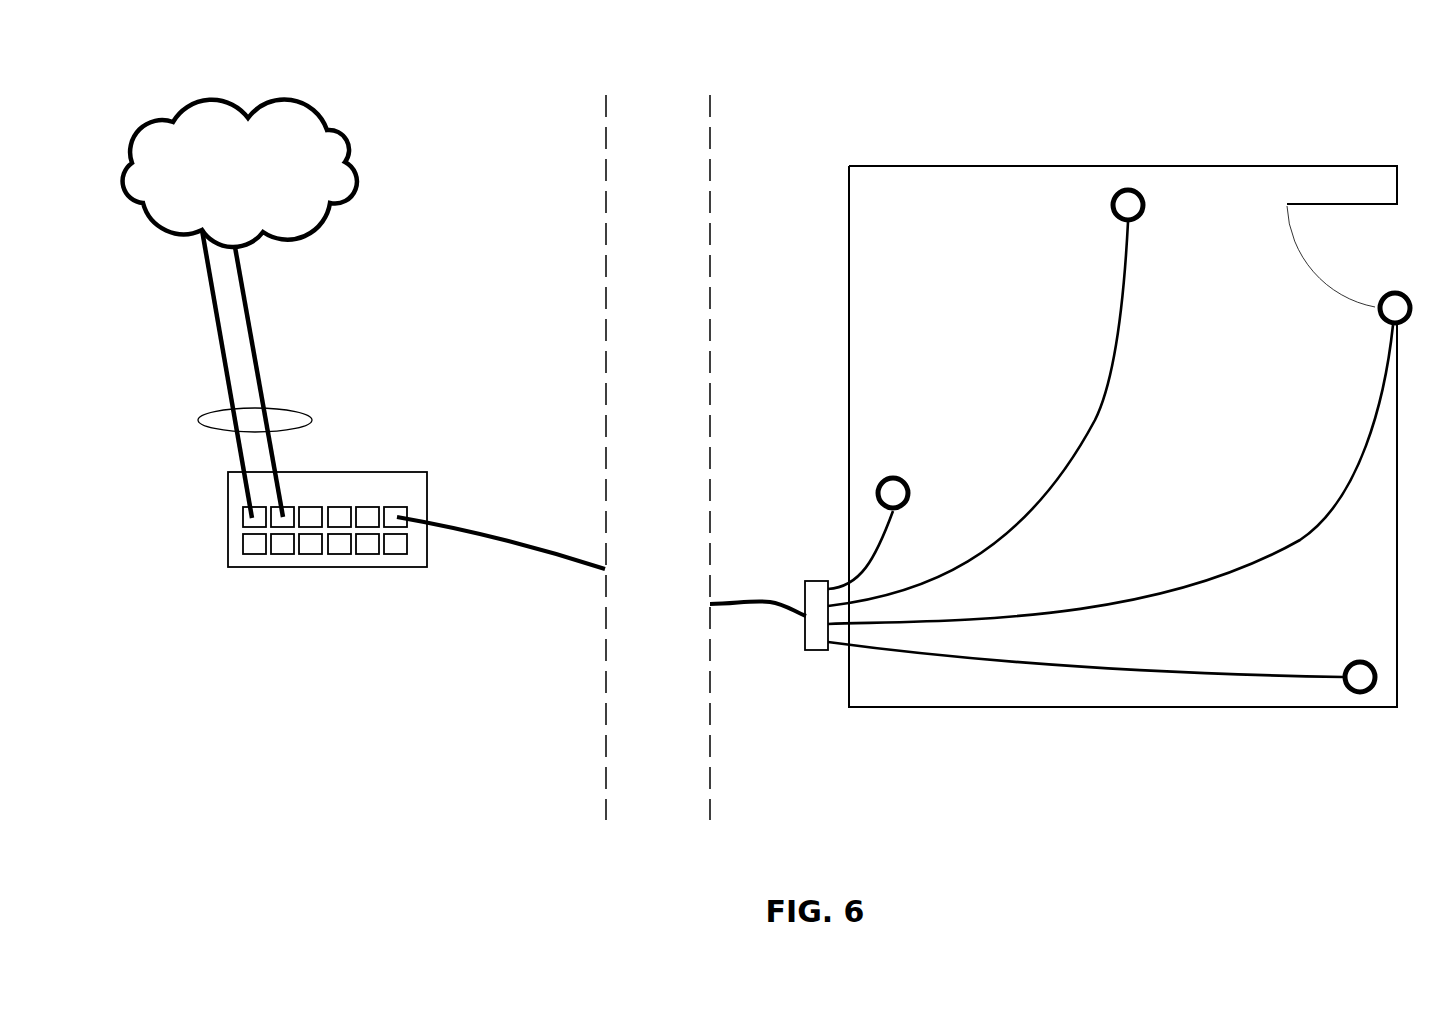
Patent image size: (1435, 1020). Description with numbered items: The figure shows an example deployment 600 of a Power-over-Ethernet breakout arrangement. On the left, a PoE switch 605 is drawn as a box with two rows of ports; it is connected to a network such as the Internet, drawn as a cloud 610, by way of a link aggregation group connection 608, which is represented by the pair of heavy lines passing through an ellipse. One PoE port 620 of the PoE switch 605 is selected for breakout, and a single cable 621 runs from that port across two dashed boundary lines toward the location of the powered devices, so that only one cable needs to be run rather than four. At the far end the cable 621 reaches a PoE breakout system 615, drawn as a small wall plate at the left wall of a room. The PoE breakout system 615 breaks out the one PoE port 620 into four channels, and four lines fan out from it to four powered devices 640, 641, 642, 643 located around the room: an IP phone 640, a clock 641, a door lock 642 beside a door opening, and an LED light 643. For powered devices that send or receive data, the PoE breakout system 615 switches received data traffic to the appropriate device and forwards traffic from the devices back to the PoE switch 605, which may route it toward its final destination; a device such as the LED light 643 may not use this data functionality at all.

The PoE network system 600 is at (799, 24).
The network / internet cloud 610 is at (326, 220).
The link aggregation group (LAG) connection 608 is at (296, 412).
The PoE switch 605 is at (273, 573).
The PoE port 620 is at (410, 512).
The cable 621 is at (547, 558).
The PoE breakout system 615 is at (803, 647).
The powered device 640 is at (909, 532).
The powered device 641 is at (1016, 393).
The powered device 642 is at (1119, 458).
The LED light 643 is at (1101, 655).